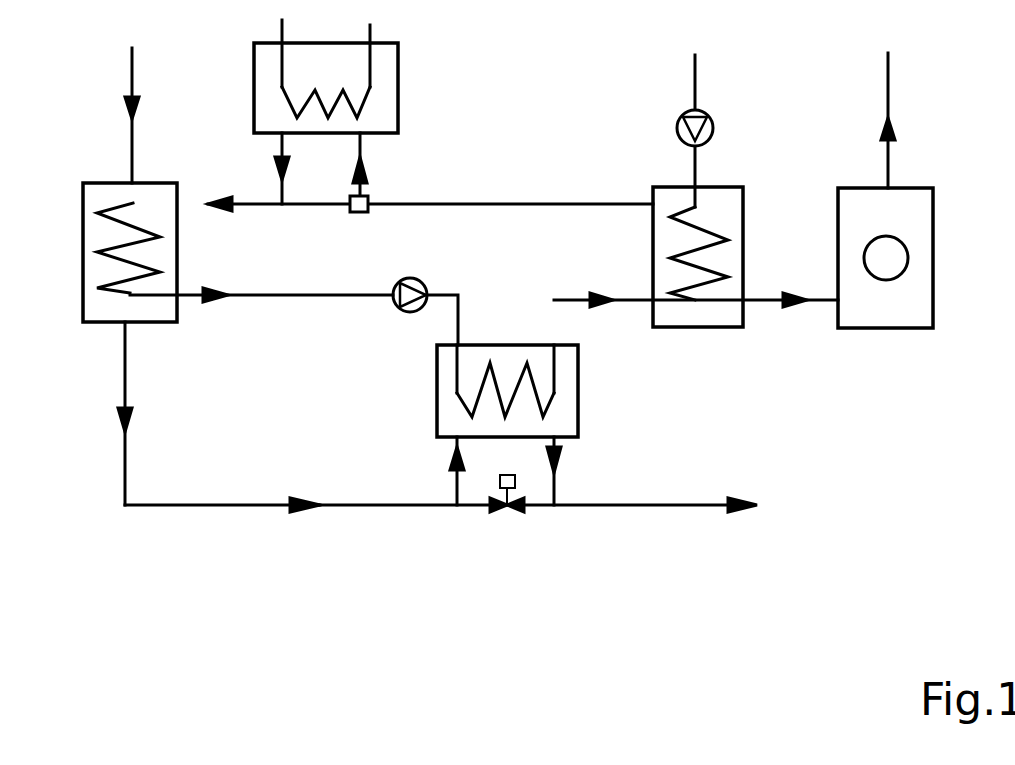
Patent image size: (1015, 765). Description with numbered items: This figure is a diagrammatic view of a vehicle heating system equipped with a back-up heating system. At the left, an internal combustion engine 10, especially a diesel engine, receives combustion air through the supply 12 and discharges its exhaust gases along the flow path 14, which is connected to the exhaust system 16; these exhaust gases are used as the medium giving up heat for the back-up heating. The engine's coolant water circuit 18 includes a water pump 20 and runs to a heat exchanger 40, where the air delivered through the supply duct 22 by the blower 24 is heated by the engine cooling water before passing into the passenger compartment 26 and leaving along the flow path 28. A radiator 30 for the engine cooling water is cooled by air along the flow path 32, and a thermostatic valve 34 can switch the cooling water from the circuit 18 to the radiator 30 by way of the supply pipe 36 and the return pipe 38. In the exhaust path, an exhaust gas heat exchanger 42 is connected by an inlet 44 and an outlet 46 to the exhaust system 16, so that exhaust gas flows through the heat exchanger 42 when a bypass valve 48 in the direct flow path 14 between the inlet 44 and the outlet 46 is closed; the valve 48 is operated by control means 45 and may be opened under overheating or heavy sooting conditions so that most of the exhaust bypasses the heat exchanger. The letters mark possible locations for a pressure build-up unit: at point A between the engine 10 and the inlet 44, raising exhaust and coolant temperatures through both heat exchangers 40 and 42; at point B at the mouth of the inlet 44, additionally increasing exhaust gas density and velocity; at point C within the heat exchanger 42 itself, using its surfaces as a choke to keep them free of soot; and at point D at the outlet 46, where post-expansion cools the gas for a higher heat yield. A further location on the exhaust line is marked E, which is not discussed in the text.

The internal combustion engine 10 is at (83, 266).
The combustion air supply 12 is at (129, 141).
The exhaust gas flow path 14 is at (127, 375).
The exhaust system 16 is at (713, 505).
The coolant water circuit 18 is at (274, 300).
The water pump 20 is at (414, 277).
The supply duct 22 is at (695, 89).
The blower 24 is at (677, 128).
The passenger compartment 26 is at (855, 195).
The air flow path 28 is at (888, 90).
The radiator 30 is at (399, 109).
The cooling air flow path 32 is at (370, 33).
The thermostatic valve 34 is at (369, 200).
The supply pipe 36 is at (362, 156).
The return pipe 38 is at (282, 152).
The heat exchanger 40 is at (653, 195).
The exhaust gas heat exchanger 42 is at (578, 366).
The inlet 44 is at (458, 487).
The control means 45 is at (510, 474).
The outlet 46 is at (560, 493).
The bypass valve 48 is at (520, 516).
The pressure build-up point A is at (123, 514).
The pressure build-up point B is at (447, 444).
The pressure build-up point C is at (505, 360).
The pressure build-up point D is at (563, 450).
The point E is at (450, 518).